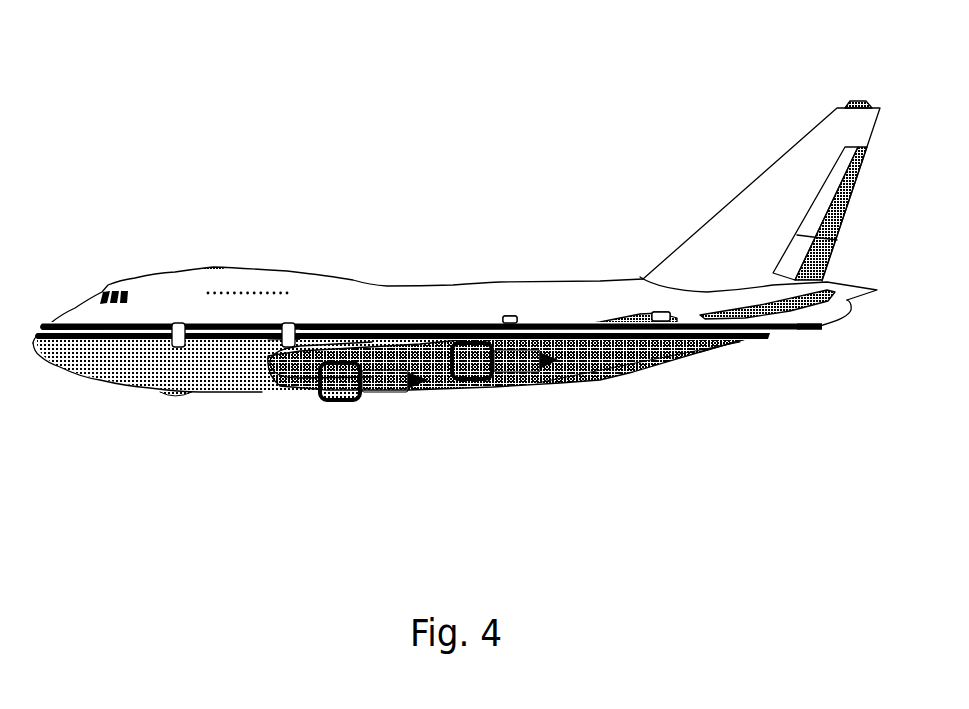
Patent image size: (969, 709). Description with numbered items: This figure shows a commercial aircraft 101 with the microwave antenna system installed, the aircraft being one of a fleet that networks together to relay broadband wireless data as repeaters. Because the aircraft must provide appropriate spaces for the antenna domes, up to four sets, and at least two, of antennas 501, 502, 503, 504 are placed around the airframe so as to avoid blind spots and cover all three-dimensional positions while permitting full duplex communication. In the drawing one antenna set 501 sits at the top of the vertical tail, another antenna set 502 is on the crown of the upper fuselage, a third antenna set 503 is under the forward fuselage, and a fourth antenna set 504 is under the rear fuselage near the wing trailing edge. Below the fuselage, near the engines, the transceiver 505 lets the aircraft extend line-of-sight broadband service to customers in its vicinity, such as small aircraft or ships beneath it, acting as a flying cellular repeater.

The commercial aircraft taking off 101 is at (448, 280).
The antenna set 501 is at (863, 98).
The antenna set 502 is at (213, 263).
The antenna set 503 is at (175, 398).
The antenna set 504 is at (650, 375).
The transceiver 505 is at (422, 385).